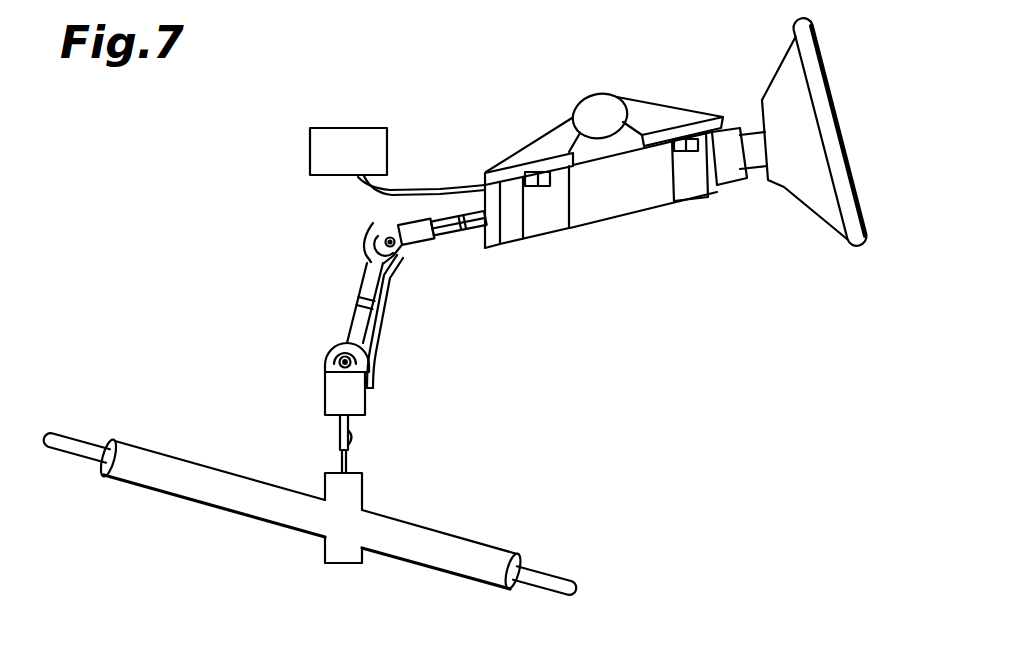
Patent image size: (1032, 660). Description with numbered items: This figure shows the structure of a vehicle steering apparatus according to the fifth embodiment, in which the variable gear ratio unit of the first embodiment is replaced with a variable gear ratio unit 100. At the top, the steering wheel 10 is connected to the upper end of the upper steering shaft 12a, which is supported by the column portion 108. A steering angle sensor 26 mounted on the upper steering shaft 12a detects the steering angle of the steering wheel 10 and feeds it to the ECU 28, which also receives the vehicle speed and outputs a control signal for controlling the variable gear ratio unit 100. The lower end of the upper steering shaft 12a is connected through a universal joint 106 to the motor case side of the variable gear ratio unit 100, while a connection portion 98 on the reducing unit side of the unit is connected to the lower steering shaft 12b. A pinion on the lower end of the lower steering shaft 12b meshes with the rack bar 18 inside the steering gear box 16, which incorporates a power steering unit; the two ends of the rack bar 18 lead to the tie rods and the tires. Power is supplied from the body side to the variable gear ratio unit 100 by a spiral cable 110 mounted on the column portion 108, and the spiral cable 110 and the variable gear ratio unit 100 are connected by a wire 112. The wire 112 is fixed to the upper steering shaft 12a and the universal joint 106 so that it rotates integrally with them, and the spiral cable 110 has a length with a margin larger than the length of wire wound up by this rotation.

The steering wheel 10 is at (818, 68).
The column portion 108 is at (644, 194).
The spiral cable 110 is at (520, 239).
The steering angle sensor 26 is at (493, 244).
The ECU 28 is at (368, 133).
The upper steering shaft 12a is at (443, 225).
The universal joint 106 is at (360, 327).
The wire 112 is at (412, 268).
The variable gear ratio unit 100 is at (366, 397).
The connection portion 98 is at (340, 426).
The lower steering shaft 12b is at (347, 458).
The steering gear box 16 is at (348, 566).
The rack bar 18 is at (63, 437).